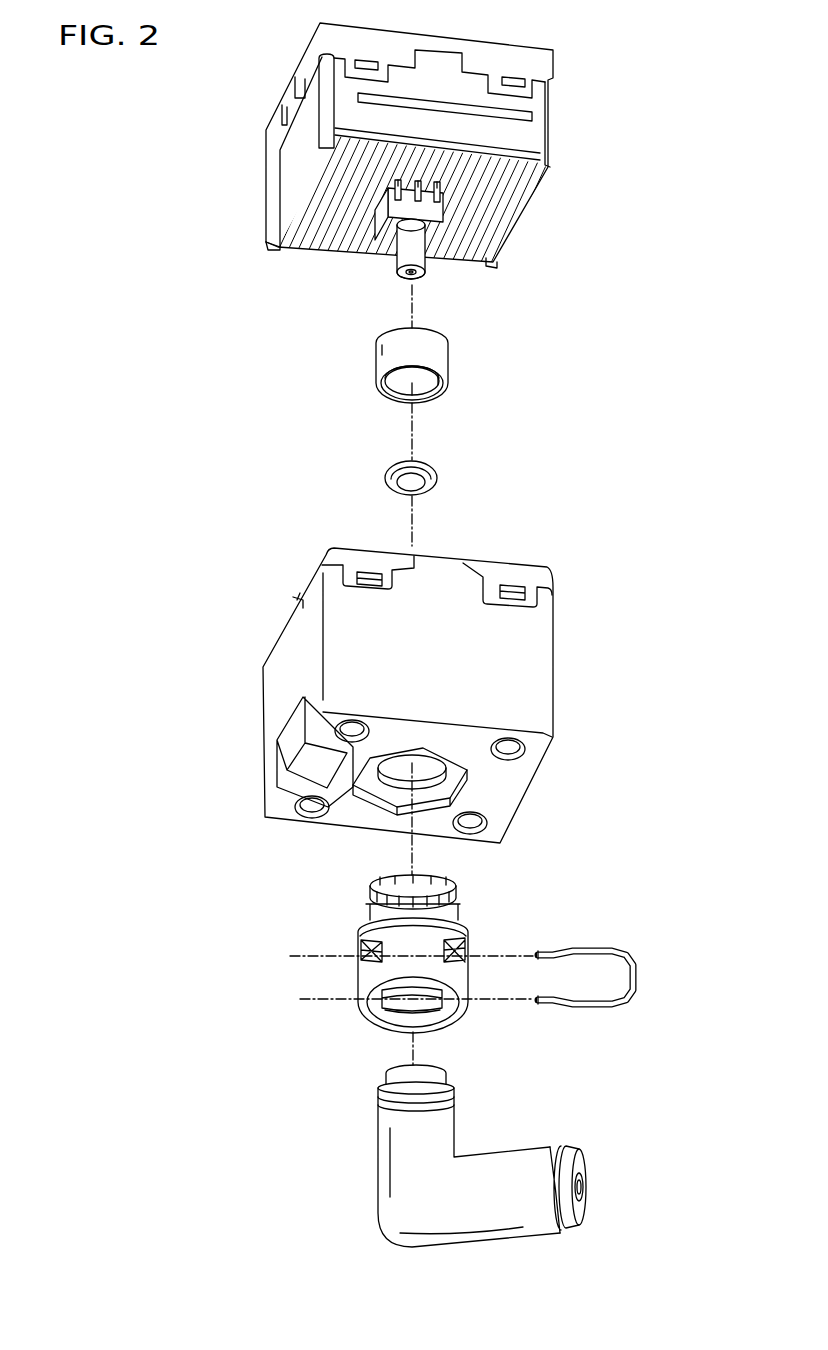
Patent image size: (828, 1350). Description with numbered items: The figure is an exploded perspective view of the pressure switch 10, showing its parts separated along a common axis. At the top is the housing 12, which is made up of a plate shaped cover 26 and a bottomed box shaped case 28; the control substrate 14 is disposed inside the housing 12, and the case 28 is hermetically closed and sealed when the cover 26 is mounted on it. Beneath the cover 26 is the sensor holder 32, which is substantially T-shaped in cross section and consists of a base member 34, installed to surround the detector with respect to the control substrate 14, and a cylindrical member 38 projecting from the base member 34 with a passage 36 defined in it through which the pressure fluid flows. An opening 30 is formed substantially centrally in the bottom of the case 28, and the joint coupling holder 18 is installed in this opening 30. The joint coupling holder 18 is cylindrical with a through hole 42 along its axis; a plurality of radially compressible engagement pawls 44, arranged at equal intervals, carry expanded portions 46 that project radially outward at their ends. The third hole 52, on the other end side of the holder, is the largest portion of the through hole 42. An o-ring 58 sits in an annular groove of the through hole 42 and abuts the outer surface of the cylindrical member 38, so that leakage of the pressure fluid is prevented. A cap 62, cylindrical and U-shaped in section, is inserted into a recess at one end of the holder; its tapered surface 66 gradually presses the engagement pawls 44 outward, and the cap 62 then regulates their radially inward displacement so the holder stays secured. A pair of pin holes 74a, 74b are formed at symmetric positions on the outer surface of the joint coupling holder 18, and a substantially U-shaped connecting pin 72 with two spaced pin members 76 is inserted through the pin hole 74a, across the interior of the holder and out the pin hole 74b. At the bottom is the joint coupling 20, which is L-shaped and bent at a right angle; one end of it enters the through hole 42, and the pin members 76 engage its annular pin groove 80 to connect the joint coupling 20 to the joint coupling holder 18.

The pressure switch 10 is at (147, 147).
The housing 12 is at (528, 216).
The control substrate 14 is at (297, 228).
The joint coupling holder 18 is at (466, 921).
The joint coupling 20 is at (427, 1250).
The cover 26 is at (497, 50).
The case 28 is at (543, 638).
The opening 30 is at (400, 757).
The sensor holder 32 is at (385, 245).
The base member 34 is at (432, 232).
The passage 36 is at (410, 278).
The cylindrical member 38 is at (425, 262).
The through hole 42 is at (406, 1028).
The engagement pawls 44 is at (392, 880).
The expanded portions 46 is at (431, 880).
The third hole 52 is at (438, 1022).
The o-ring 58 is at (437, 478).
The cap 62 is at (375, 345).
The tapered surface 66 is at (432, 360).
The connecting pin 72 is at (632, 950).
The pin hole 74a is at (463, 945).
The pin hole 74b is at (366, 946).
The pin members 76 is at (551, 1006).
The pin groove 80 is at (390, 1104).